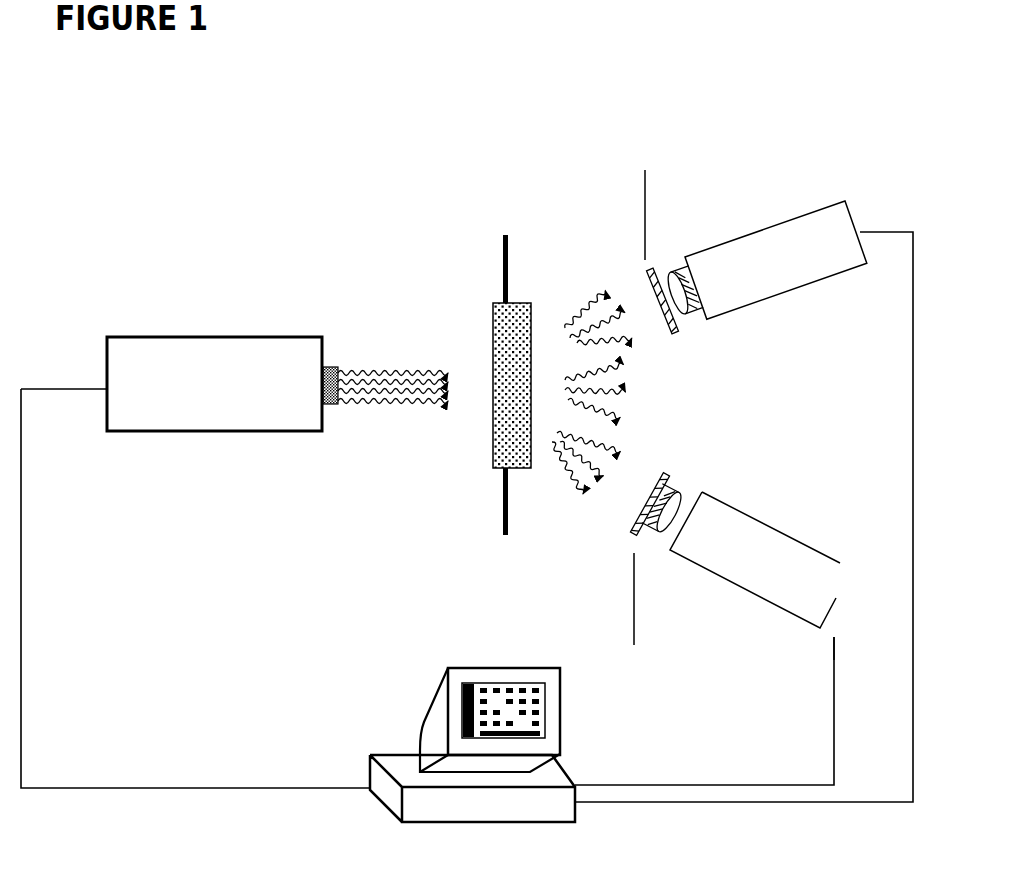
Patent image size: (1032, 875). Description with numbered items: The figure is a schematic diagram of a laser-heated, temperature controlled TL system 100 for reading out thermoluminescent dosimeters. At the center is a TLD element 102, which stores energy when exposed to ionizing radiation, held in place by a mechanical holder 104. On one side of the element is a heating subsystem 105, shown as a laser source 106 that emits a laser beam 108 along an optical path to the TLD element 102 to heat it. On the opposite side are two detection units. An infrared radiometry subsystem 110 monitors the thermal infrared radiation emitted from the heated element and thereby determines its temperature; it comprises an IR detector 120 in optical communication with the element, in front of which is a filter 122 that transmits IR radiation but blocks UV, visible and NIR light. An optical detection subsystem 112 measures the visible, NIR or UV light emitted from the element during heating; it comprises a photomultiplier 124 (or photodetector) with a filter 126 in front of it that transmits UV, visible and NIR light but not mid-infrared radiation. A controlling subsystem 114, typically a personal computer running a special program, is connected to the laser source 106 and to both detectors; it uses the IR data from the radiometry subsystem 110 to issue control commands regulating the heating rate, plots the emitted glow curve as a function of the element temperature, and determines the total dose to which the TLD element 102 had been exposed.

The temperature controlled TL system 100 is at (110, 94).
The TLD element 102 is at (503, 352).
The mechanical holder 104 is at (500, 360).
The heating subsystem 105 is at (277, 424).
The laser source 106 is at (214, 384).
The laser beam 108 is at (385, 410).
The infrared radiometry subsystem 110 is at (756, 223).
The optical detection subsystem 112 is at (758, 568).
The controlling subsystem 114 is at (442, 745).
The IR detector 120 is at (765, 265).
The filter 122 is at (675, 248).
The photomultiplier 124 is at (732, 504).
The filter 126 is at (734, 608).